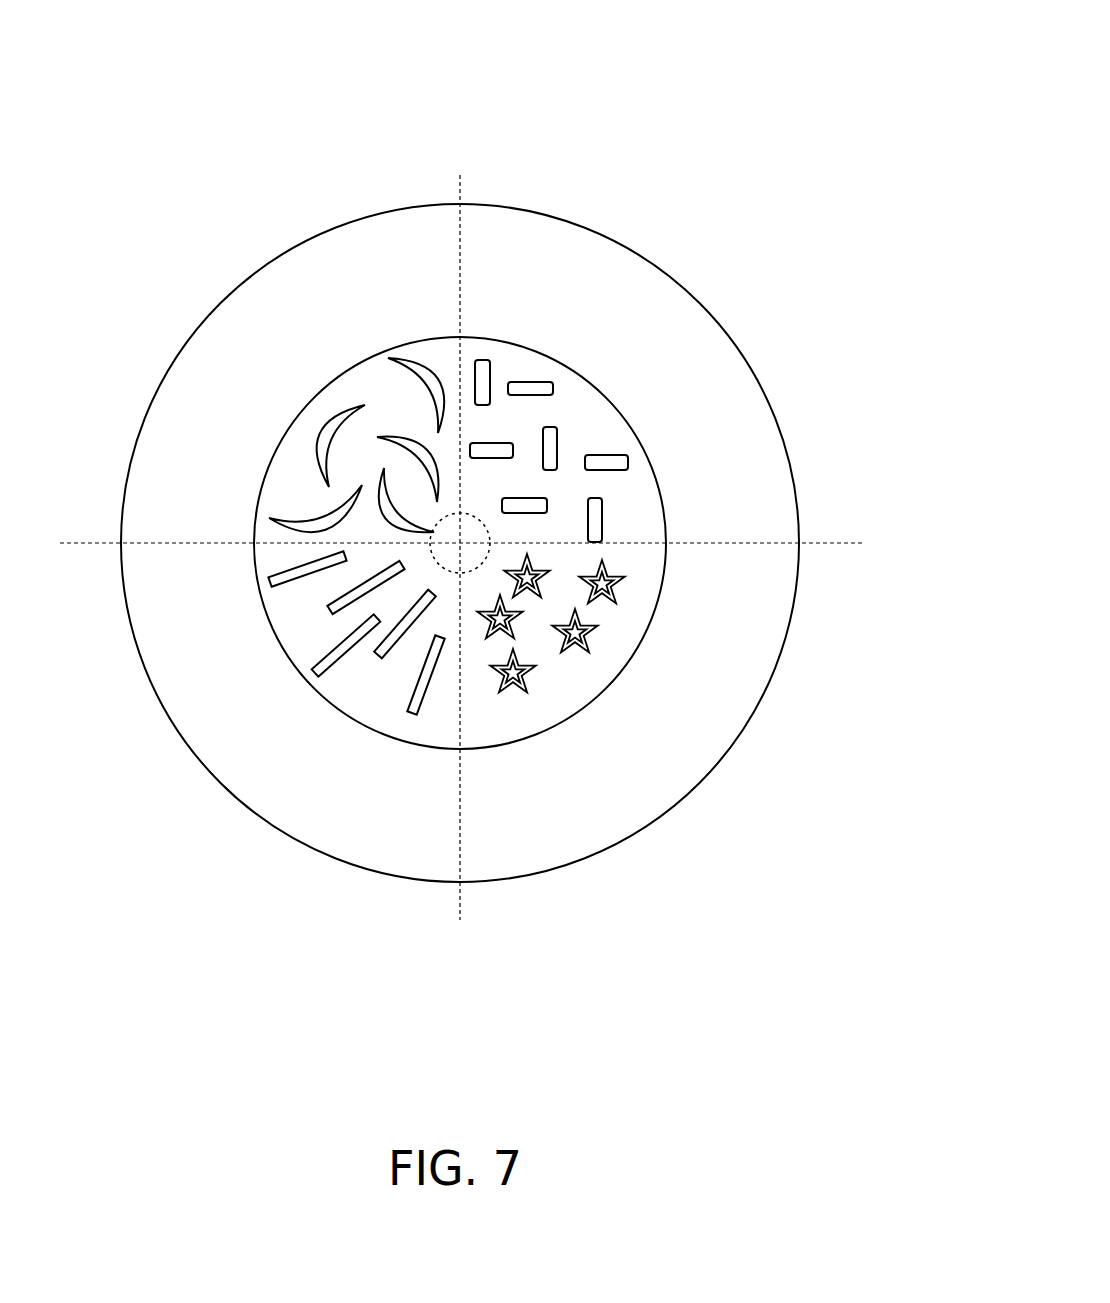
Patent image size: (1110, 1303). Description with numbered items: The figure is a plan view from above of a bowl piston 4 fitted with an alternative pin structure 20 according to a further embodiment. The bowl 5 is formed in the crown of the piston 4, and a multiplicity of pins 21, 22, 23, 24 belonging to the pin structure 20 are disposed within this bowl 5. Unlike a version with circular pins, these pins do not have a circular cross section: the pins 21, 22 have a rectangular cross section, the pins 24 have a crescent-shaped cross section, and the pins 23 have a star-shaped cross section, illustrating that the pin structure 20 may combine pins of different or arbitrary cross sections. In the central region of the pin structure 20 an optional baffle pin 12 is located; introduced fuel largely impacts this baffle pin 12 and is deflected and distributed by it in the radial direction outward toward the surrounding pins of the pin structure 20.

The bowl piston 4 is at (538, 208).
The bowl 5 is at (407, 342).
The baffle pin 12 is at (480, 520).
The pin structure 20 is at (289, 462).
The pins with rectangular cross section 21 is at (343, 657).
The pins with rectangular cross section 22 is at (490, 374).
The pins with star-shaped cross section 23 is at (597, 632).
The pins with crescent-shaped cross section 24 is at (330, 434).